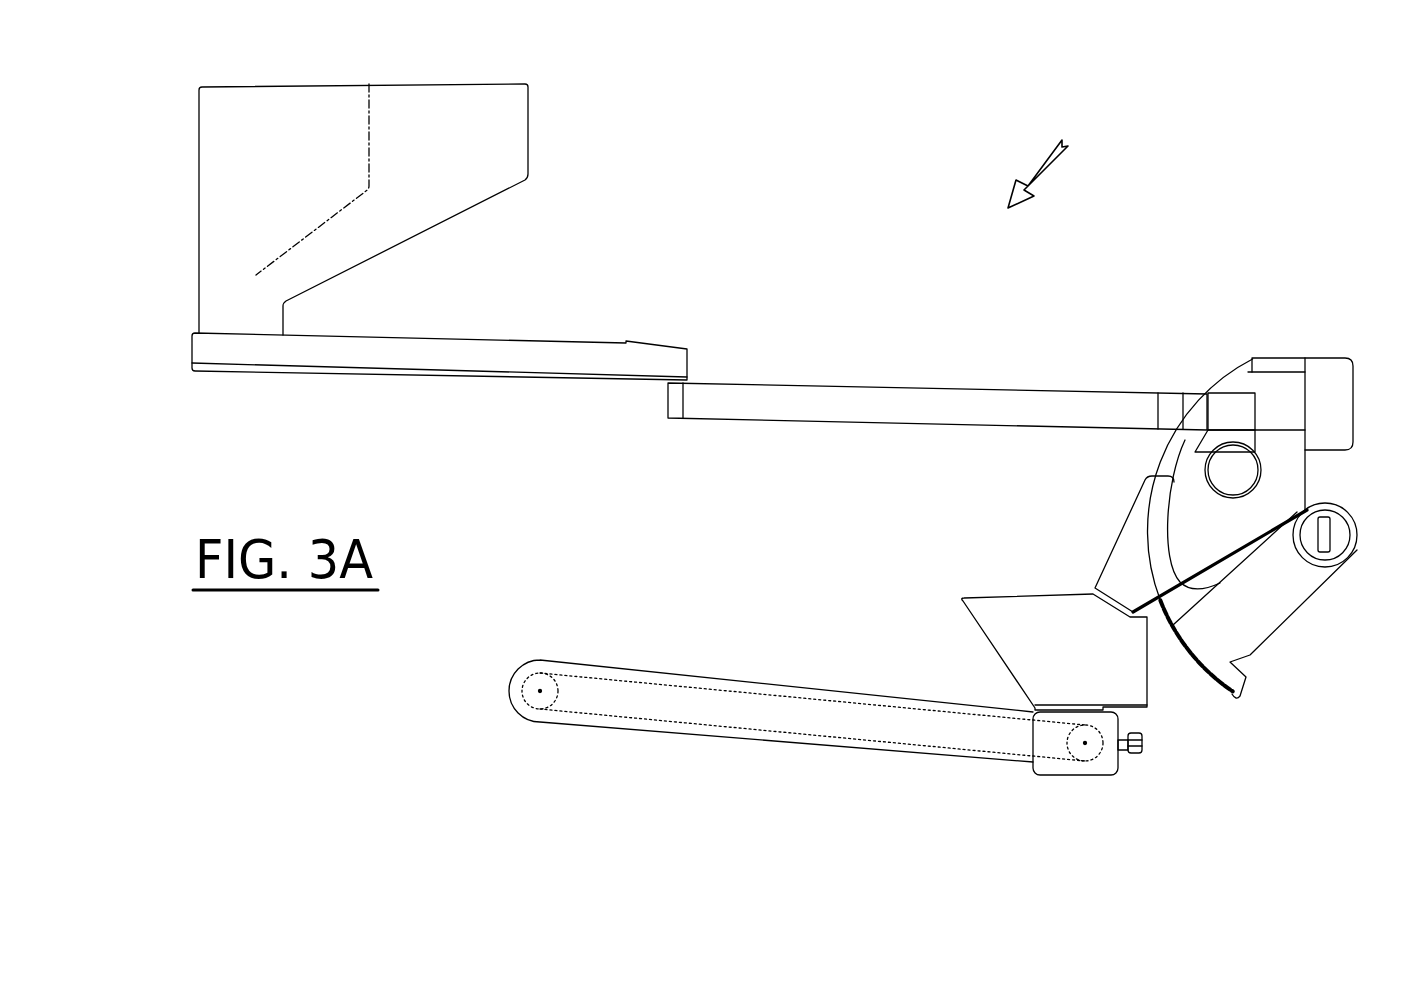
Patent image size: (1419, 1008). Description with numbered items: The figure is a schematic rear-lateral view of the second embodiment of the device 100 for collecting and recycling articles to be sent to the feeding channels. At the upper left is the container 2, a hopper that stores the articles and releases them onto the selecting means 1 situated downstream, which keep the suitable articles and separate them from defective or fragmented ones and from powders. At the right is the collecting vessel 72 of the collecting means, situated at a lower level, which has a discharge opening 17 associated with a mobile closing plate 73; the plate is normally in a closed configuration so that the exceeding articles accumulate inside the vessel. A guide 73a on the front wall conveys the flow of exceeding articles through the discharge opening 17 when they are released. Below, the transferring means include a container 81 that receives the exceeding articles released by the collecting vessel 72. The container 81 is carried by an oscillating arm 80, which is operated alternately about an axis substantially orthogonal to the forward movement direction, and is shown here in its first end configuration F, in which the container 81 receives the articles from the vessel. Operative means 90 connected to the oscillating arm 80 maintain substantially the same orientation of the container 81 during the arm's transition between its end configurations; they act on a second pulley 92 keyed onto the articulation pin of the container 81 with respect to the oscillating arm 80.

The device 100 is at (1065, 156).
The container 2 is at (155, 236).
The selecting means 1 is at (600, 312).
The discharge opening 17 is at (1148, 457).
The collecting vessel 72 is at (1293, 482).
The mobile closing plate 73 is at (1272, 603).
The guide 73a is at (1143, 603).
The container 81 is at (1133, 692).
The oscillating arm 80 is at (602, 728).
The operative means 90 is at (860, 718).
The second pulley 92 is at (1085, 750).
The first end configuration F is at (726, 752).